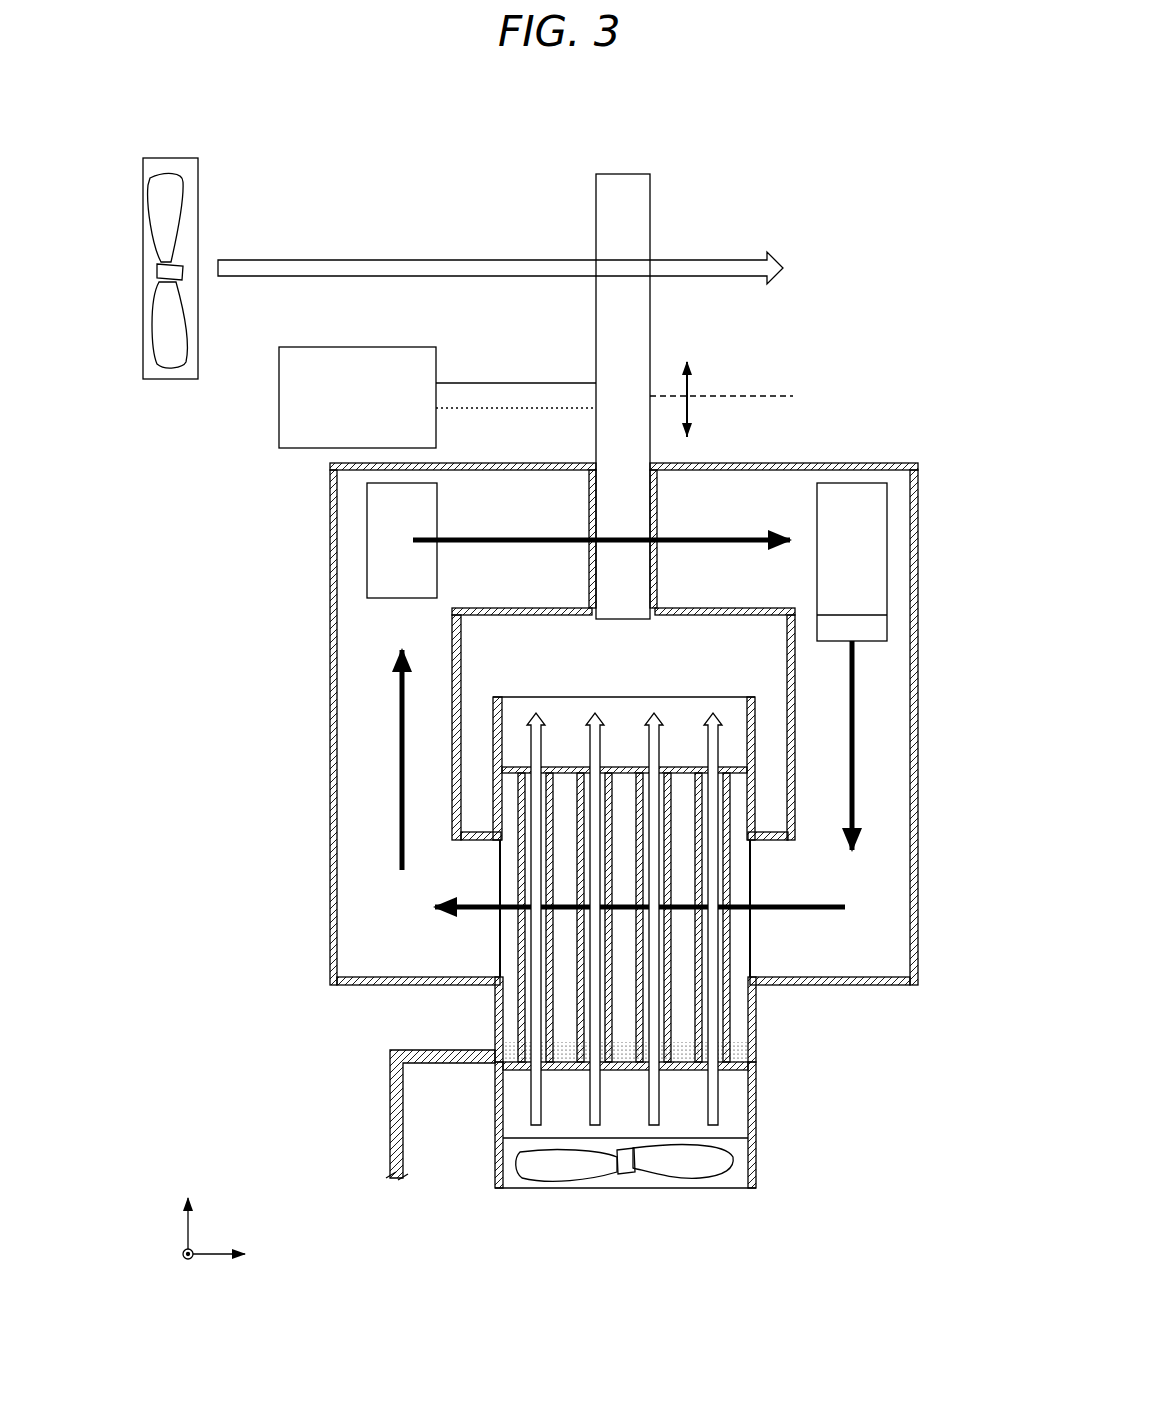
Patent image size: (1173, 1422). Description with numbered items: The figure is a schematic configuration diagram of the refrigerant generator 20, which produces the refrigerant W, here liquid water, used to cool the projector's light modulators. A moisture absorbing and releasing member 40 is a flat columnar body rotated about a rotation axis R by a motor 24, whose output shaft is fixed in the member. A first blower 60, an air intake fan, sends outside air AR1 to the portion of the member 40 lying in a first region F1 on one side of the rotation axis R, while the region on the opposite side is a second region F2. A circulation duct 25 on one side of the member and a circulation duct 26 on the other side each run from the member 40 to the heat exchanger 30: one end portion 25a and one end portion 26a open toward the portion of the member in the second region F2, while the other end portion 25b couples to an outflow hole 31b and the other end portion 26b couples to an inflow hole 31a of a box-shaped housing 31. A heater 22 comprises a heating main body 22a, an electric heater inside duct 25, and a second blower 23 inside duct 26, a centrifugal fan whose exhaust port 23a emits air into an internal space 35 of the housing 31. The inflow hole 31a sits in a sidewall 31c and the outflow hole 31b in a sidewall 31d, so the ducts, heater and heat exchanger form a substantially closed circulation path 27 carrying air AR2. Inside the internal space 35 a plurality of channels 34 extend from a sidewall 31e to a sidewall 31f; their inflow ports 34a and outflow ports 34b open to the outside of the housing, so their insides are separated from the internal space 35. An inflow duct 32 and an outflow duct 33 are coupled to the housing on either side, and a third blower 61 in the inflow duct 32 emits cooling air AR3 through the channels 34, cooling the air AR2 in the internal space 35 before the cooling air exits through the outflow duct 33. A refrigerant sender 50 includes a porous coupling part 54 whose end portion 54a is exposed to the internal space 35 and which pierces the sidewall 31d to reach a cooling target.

The refrigerant generator 20 is at (776, 128).
The heater 22 is at (602, 562).
The heating main body 22a is at (388, 513).
The second blower 23 is at (905, 562).
The exhaust port 23a is at (875, 627).
The motor 24 is at (285, 408).
The circulation duct 25 is at (427, 666).
The one end portion of circulation duct 25 25a is at (588, 462).
The other end portion of circulation duct 25 25b is at (420, 984).
The circulation duct 26 is at (804, 656).
The one end portion of circulation duct 26 26a is at (668, 462).
The other end portion of circulation duct 26 26b is at (760, 985).
The circulation path 27 is at (780, 483).
The heat exchanger 30 is at (621, 973).
The housing 31 is at (621, 918).
The inflow hole 31a is at (755, 842).
The outflow hole 31b is at (498, 842).
The sidewall 31c is at (757, 1010).
The sidewall 31d is at (494, 1020).
The sidewall 31e is at (755, 1096).
The sidewall 31f is at (687, 766).
The inflow duct 32 is at (757, 1124).
The outflow duct 33 is at (763, 705).
The channels 34 is at (550, 1068).
The inflow ports 34a is at (530, 1125).
The outflow ports 34b is at (529, 765).
The internal space 35 is at (740, 805).
The moisture absorbing and releasing member 40 is at (619, 190).
The refrigerant sender 50 is at (407, 1147).
The coupling part 54 is at (403, 1125).
The end portion of coupling part 54a is at (493, 1068).
The first blower 60 is at (153, 158).
The third blower 61 is at (734, 1180).
The air AR1 is at (358, 268).
The air AR2 is at (855, 757).
The cooling air AR3 is at (757, 1100).
The first region F1 is at (708, 385).
The second region F2 is at (708, 426).
The rotation axis R is at (762, 396).
The refrigerant W is at (756, 1055).